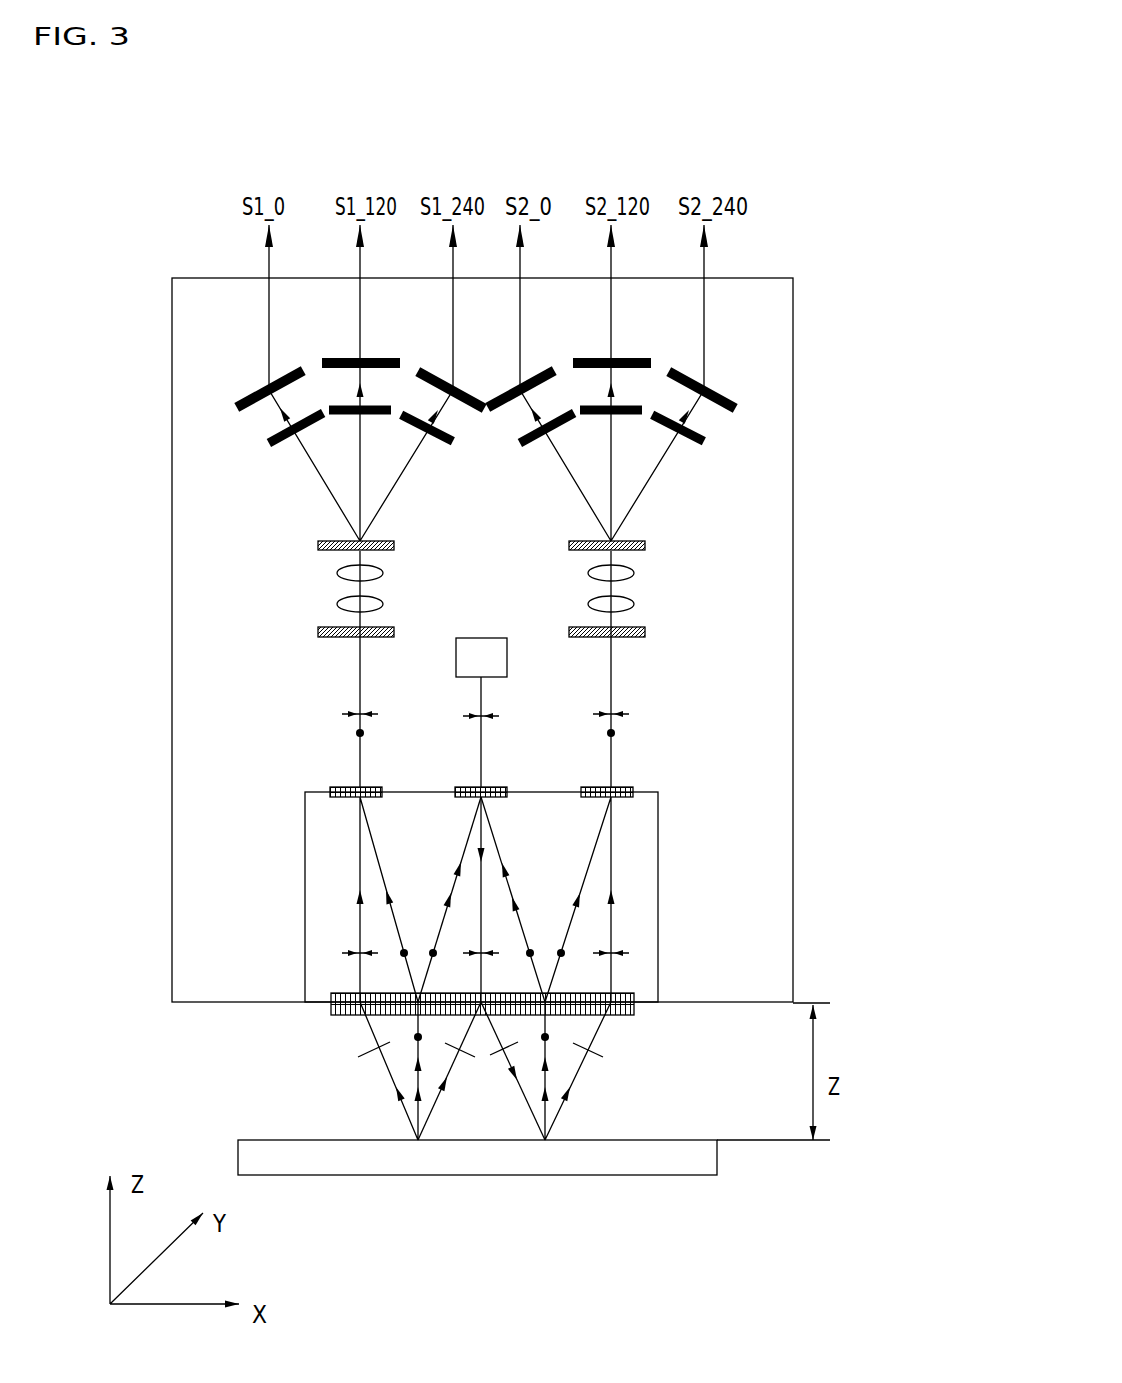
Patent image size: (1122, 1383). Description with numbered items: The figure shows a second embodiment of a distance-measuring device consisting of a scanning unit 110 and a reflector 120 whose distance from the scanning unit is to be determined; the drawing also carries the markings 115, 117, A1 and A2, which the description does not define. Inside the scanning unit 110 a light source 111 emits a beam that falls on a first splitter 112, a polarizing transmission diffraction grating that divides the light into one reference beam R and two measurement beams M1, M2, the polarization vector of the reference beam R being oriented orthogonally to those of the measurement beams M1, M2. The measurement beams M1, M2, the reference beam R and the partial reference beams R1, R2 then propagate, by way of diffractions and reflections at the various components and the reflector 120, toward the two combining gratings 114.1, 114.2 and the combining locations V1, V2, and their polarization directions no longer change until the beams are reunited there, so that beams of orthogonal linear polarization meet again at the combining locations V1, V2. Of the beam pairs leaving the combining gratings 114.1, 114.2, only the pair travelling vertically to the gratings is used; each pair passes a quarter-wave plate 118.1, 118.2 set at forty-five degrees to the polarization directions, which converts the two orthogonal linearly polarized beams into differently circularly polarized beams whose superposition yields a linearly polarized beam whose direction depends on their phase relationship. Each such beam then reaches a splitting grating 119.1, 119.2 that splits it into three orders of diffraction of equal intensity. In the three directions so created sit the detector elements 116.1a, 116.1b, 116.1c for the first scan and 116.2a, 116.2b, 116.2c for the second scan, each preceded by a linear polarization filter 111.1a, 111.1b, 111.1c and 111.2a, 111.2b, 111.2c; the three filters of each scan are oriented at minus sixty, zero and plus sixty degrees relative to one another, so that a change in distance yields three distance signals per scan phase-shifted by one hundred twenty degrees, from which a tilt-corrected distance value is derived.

The scanning unit 110 is at (770, 683).
The light source 111 is at (482, 638).
The first splitter 112 is at (500, 787).
The combining grating 114.1 is at (338, 787).
The combining grating 114.2 is at (627, 783).
The scanning plate 115 is at (642, 936).
The beam path 117 is at (202, 940).
The λ/4 plate 118.1 is at (318, 633).
The λ/4 plate 118.2 is at (645, 633).
The splitting grating 119.1 is at (318, 547).
The splitting grating 119.2 is at (645, 548).
The linear polarization filter 111.1a is at (272, 445).
The linear polarization filter 111.1b is at (346, 414).
The linear polarization filter 111.1c is at (447, 443).
The linear polarization filter 111.2a is at (525, 443).
The linear polarization filter 111.2b is at (628, 418).
The linear polarization filter 111.2c is at (687, 443).
The detector element 116.1a is at (252, 393).
The detector element 116.1b is at (343, 360).
The detector element 116.1c is at (440, 367).
The detector element 116.2a is at (495, 393).
The detector element 116.2b is at (595, 360).
The detector element 116.2c is at (723, 393).
The reflector 120 is at (698, 1160).
The combining location V1 is at (352, 800).
The combining location V2 is at (620, 797).
The measurement beam M1 is at (470, 826).
The measurement beam M2 is at (492, 818).
The reference beam R is at (478, 890).
The first beam bundle A1 is at (412, 1140).
The second beam bundle A2 is at (543, 1140).
The partial reference beam R1 is at (431, 1108).
The partial reference beam R2 is at (523, 1103).